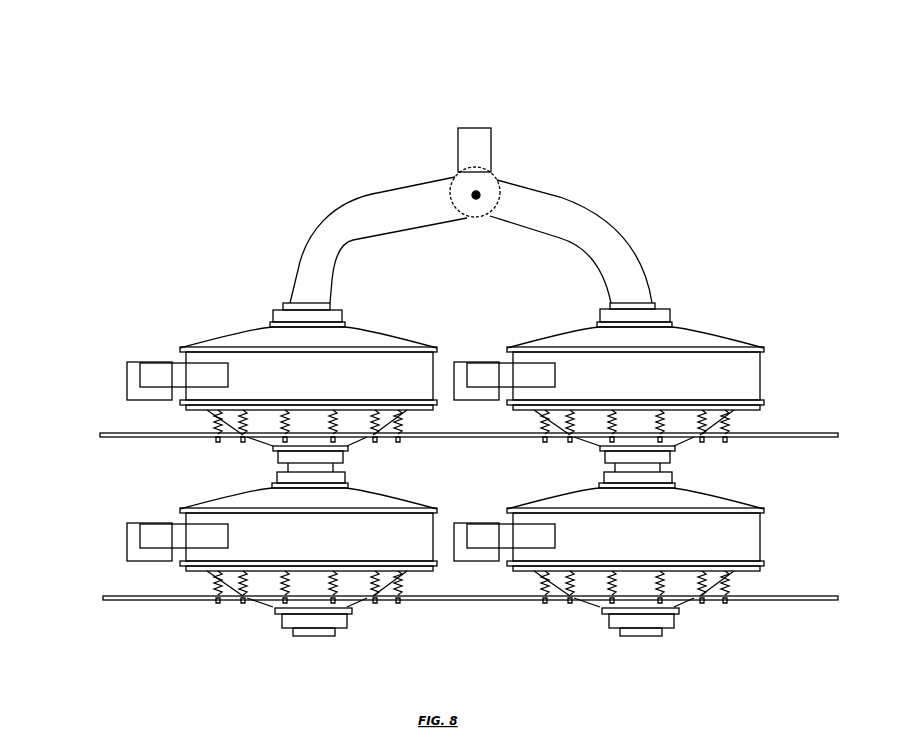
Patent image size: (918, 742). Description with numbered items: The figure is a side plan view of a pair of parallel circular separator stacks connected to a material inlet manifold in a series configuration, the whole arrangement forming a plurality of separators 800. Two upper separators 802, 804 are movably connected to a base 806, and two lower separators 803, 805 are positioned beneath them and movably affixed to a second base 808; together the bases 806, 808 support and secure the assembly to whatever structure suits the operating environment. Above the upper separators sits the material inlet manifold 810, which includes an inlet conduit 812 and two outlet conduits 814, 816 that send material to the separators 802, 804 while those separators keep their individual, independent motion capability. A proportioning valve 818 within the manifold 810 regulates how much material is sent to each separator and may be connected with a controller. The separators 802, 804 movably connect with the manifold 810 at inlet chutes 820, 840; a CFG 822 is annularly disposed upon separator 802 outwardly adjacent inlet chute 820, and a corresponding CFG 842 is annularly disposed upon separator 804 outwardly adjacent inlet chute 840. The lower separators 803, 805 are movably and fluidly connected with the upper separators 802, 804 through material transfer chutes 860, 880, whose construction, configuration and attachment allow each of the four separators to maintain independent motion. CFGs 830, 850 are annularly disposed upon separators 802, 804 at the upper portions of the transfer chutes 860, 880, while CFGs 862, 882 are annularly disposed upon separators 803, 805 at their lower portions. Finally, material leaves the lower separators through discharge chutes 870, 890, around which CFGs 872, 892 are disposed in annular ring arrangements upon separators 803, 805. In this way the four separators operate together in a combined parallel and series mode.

The plurality of separators 800 is at (538, 53).
The separator 802 is at (192, 333).
The lower separator 803 is at (210, 498).
The separator 804 is at (727, 333).
The lower separator 805 is at (767, 532).
The base 806 is at (765, 430).
The base 808 is at (772, 592).
The material inlet manifold 810 is at (538, 163).
The inlet conduit 812 is at (457, 145).
The outlet conduit 814 is at (383, 192).
The outlet conduit 816 is at (605, 212).
The proportioning valve 818 is at (476, 199).
The inlet chute 820 is at (282, 300).
The CFG 822 is at (338, 305).
The CFG 830 is at (272, 449).
The inlet chute 840 is at (608, 303).
The CFG 842 is at (665, 310).
The CFG 850 is at (672, 455).
The material transfer chute 860 is at (287, 467).
The CFG 862 is at (345, 480).
The discharge chute 870 is at (303, 635).
The CFG 872 is at (348, 620).
The material transfer chute 880 is at (660, 467).
The CFG 882 is at (672, 480).
The discharge chute 890 is at (625, 635).
The CFG 892 is at (678, 620).